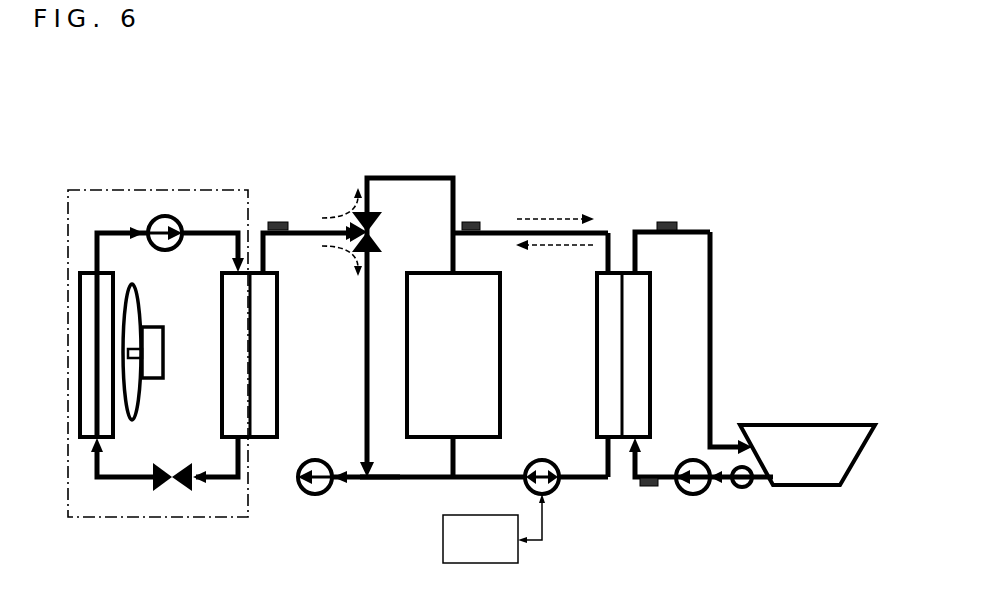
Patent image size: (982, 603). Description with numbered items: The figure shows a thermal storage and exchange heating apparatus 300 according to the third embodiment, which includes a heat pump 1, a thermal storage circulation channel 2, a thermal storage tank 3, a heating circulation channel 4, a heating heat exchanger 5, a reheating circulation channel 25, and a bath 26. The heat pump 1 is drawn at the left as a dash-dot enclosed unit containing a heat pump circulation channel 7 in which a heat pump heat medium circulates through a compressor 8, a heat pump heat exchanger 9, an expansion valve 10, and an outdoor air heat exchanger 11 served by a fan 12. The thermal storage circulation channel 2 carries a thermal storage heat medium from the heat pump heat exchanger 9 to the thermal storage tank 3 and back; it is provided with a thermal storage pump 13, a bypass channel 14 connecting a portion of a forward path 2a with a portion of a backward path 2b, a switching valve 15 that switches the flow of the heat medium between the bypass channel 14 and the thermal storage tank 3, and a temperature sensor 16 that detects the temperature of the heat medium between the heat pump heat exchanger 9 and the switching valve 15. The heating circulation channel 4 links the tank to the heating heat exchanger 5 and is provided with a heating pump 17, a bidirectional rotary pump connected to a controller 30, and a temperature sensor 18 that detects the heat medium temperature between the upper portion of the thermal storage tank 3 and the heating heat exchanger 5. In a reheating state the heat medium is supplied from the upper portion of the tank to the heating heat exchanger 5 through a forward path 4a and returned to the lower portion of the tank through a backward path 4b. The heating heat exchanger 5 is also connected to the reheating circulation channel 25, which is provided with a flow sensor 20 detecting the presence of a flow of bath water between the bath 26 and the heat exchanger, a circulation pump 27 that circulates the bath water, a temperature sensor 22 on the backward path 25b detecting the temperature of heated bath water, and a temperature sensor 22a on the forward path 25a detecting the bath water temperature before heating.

The heat pump 1 is at (157, 190).
The thermal storage circulation channel 2 is at (423, 482).
The forward path 2a is at (385, 178).
The backward path 2b is at (388, 482).
The thermal storage tank 3 is at (502, 352).
The heating circulation channel 4 is at (500, 233).
The forward path 4a is at (606, 233).
The backward path 4b is at (590, 482).
The heating heat exchanger 5 is at (655, 340).
The heat pump circulation channel 7 is at (118, 232).
The compressor 8 is at (172, 215).
The heat pump heat exchanger 9 is at (278, 334).
The expansion valve 10 is at (185, 487).
The outdoor air heat exchanger 11 is at (80, 302).
The fan 12 is at (141, 305).
The thermal storage pump 13 is at (306, 495).
The bypass channel 14 is at (362, 380).
The switching valve 15 is at (376, 238).
The temperature sensor 16 is at (273, 222).
The heating pump 17 is at (551, 496).
The temperature sensor 18 is at (468, 222).
The flow sensor 20 is at (752, 485).
The temperature sensor 22 is at (660, 218).
The temperature sensor 22a is at (652, 488).
The reheating circulation channel 25 is at (712, 300).
The forward path 25a is at (665, 470).
The backward path 25b is at (707, 228).
The bath 26 is at (818, 425).
The circulation pump 27 is at (705, 492).
The controller 30 is at (520, 551).
The thermal storage and exchange heating apparatus 300 is at (436, 153).